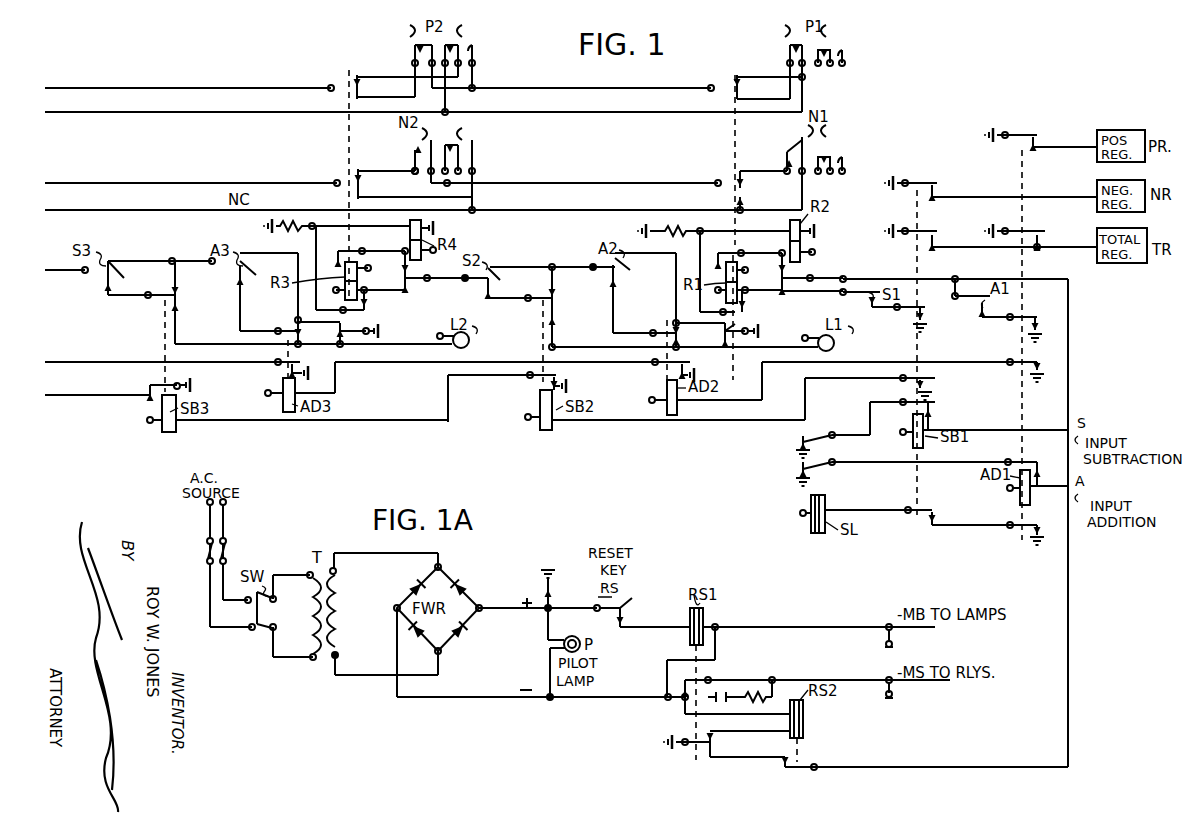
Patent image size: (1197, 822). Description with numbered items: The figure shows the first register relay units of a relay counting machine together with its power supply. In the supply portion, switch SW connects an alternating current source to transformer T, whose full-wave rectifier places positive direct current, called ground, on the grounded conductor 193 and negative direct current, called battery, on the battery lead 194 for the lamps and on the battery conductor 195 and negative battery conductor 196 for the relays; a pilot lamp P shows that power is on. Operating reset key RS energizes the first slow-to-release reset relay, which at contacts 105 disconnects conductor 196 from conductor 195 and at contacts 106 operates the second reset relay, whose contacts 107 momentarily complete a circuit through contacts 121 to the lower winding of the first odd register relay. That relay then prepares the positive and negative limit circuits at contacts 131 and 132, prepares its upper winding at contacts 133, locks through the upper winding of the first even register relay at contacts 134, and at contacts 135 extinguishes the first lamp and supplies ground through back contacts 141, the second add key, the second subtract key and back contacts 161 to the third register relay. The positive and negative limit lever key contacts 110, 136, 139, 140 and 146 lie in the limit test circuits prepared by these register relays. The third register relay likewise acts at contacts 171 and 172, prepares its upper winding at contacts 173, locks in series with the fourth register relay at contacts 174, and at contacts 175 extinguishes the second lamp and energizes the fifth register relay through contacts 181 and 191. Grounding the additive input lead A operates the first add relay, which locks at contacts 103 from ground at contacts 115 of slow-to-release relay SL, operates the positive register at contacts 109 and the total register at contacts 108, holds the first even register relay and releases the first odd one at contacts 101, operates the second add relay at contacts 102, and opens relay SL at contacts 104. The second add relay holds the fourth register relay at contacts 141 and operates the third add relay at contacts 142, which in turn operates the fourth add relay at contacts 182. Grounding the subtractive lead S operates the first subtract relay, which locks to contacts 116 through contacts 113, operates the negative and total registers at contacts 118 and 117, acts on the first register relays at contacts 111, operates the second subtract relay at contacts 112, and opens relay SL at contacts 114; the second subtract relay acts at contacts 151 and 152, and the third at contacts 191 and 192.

In FIG. 1, the contacts of relay AD1 101 is at (1040, 326).
In FIG. 1, the contacts of relay AD1 102 is at (1040, 366).
In FIG. 1, the contacts of relay AD1 103 is at (1040, 466).
In FIG. 1, the contacts of relay AD1 104 is at (1033, 534).
In FIG. 1A, the contacts of relay RS1 105 is at (691, 683).
In FIG. 1A, the contacts of relay RS1 106 is at (698, 748).
In FIG. 1A, the contacts of relay RS2 107 is at (782, 768).
In FIG. 1, the contacts of relay AD1 108 is at (1040, 242).
In FIG. 1, the contacts of relay AD1 109 is at (1020, 150).
In FIG. 1, the relay contact 110 is at (790, 46).
In FIG. 1, the contacts of relay SB1 111 is at (922, 314).
In FIG. 1, the contacts of relay SB1 112 is at (930, 384).
In FIG. 1, the contacts of relay SB1 113 is at (932, 406).
In FIG. 1, the contacts of relay SB1 114 is at (934, 514).
In FIG. 1, the contacts of relay SL 115 is at (820, 473).
In FIG. 1, the contacts of relay SL 116 is at (818, 446).
In FIG. 1, the contacts of relay SB1 117 is at (930, 242).
In FIG. 1, the contacts of relay SB1 118 is at (930, 192).
In FIG. 1, the contacts of relay R2 121 is at (813, 278).
In FIG. 1, the contacts of relay R1 131 is at (730, 78).
In FIG. 1, the contacts of relay R1 132 is at (733, 180).
In FIG. 1, the contacts of relay R1 133 is at (714, 258).
In FIG. 1, the contacts of relay R1 134 is at (752, 300).
In FIG. 1, the contacts of relay R1 135 is at (740, 318).
In FIG. 1, the relay contact 136 is at (790, 148).
In FIG. 1, the relay contact 139 is at (465, 45).
In FIG. 1, the relay contact 140 is at (415, 45).
In FIG. 1, the contacts of relay AD2 141 is at (673, 328).
In FIG. 1, the contacts of relay AD2 142 is at (680, 360).
In FIG. 1, the relay contact 146 is at (464, 143).
In FIG. 1, the contacts of relay SB2 151 is at (548, 296).
In FIG. 1, the contacts of relay SB2 152 is at (562, 382).
In FIG. 1, the contacts of relay R4 161 is at (416, 281).
In FIG. 1, the contacts of relay R3 171 is at (349, 78).
In FIG. 1, the contacts of relay R3 172 is at (352, 180).
In FIG. 1, the contacts of relay R3 173 is at (330, 264).
In FIG. 1, the contacts of relay R3 174 is at (368, 298).
In FIG. 1, the contacts of relay R3 175 is at (360, 328).
In FIG. 1, the contacts of relay AD3 181 is at (290, 326).
In FIG. 1, the contacts of relay AD3 182 is at (288, 372).
In FIG. 1, the contacts of relay SB3 191 is at (175, 293).
In FIG. 1, the contacts of relay SB3 192 is at (145, 386).
In FIG. 1A, the grounded conductor 193 is at (540, 590).
In FIG. 1A, the battery lead 194 is at (807, 624).
In FIG. 1A, the battery conductor 195 is at (866, 681).
In FIG. 1A, the negative battery conductor 196 is at (586, 698).